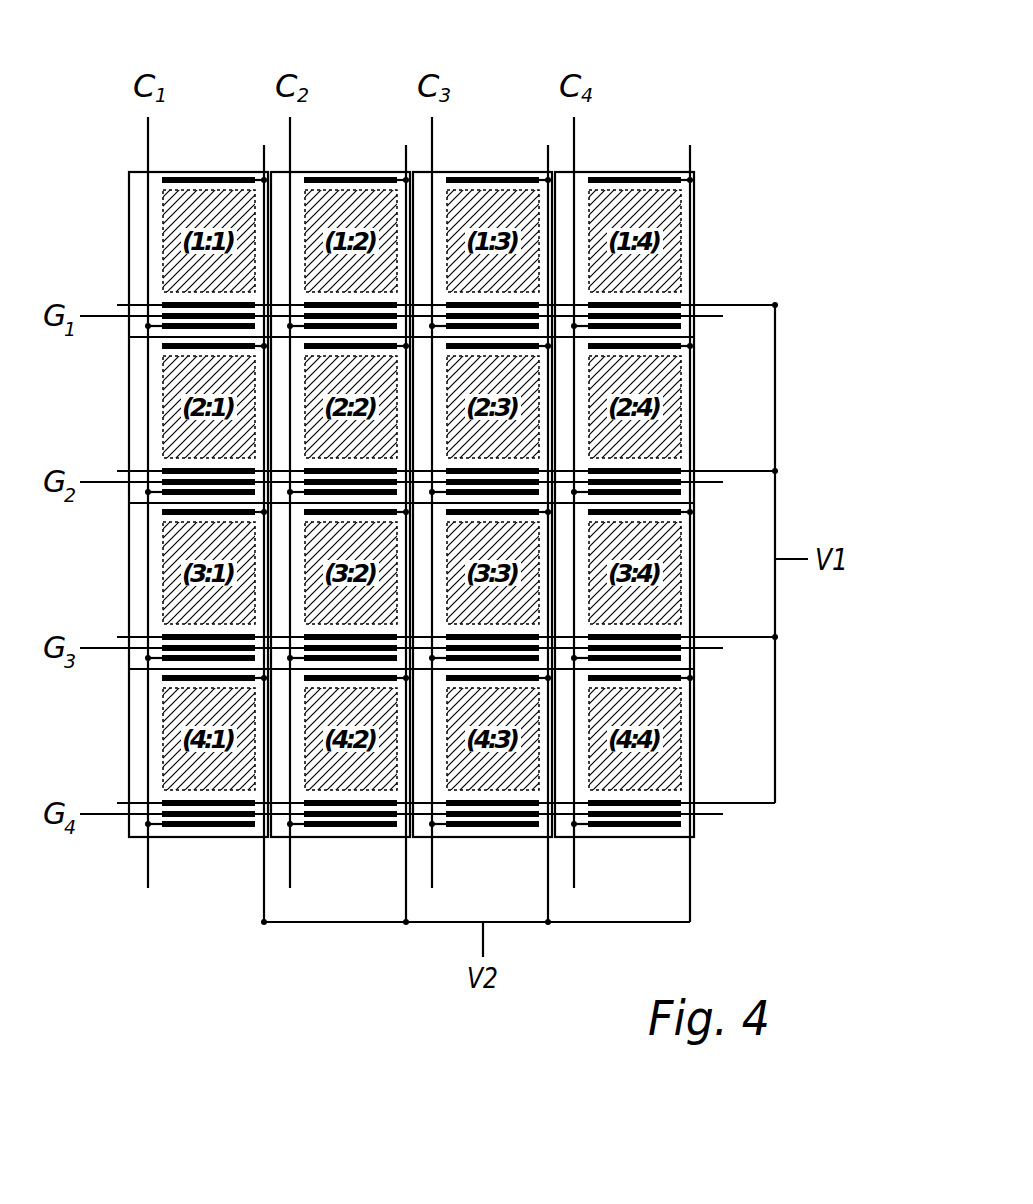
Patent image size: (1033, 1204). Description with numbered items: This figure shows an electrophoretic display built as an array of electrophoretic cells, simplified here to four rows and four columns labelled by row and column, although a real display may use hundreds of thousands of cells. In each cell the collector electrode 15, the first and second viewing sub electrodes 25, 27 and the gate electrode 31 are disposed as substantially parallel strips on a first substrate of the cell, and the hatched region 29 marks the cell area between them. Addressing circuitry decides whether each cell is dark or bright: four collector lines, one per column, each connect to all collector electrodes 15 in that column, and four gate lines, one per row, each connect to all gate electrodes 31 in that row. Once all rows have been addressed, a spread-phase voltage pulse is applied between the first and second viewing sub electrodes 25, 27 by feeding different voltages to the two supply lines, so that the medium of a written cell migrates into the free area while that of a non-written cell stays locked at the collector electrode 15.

The collector electrode 15 is at (182, 333).
The first viewing sub electrode 25 is at (163, 302).
The second viewing sub electrode 27 is at (177, 172).
The active layer region 29 is at (182, 212).
The gate electrode 31 is at (180, 329).